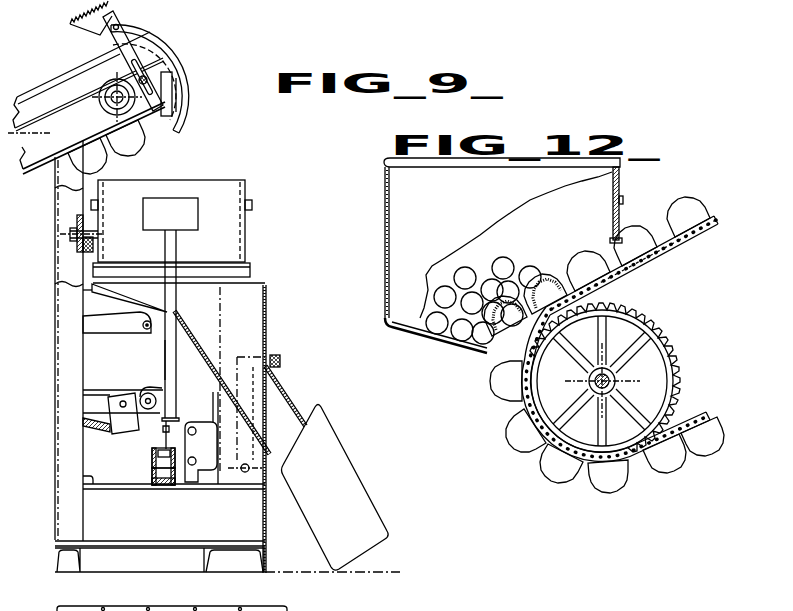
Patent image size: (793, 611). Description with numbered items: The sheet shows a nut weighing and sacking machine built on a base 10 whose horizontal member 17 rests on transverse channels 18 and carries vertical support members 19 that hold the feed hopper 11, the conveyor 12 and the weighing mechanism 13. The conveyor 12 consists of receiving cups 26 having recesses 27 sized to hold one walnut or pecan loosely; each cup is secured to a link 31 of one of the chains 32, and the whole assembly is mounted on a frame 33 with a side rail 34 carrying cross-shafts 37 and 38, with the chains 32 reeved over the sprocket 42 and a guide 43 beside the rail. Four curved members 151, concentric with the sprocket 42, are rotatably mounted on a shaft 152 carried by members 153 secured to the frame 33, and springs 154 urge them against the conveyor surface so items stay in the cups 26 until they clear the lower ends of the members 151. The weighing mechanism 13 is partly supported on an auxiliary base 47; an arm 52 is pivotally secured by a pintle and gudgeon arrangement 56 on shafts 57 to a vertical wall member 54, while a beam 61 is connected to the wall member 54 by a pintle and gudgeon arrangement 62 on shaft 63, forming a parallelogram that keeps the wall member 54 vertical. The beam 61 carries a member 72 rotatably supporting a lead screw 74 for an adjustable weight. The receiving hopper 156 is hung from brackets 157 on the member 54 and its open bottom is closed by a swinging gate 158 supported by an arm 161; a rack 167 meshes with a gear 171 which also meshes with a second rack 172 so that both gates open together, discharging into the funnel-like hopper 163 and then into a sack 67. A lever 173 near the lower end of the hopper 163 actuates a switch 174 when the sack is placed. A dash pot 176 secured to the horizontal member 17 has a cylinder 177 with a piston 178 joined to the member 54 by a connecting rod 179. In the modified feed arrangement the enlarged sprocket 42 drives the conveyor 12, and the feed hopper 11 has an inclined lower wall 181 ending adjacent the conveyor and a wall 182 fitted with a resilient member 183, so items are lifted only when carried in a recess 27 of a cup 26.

In FIG. 9, the base 10 is at (268, 560).
In FIG. 12, the feed hopper 11 is at (383, 238).
In FIG. 9, the conveyor 12 is at (70, 52).
In FIG. 12, the conveyor 12 is at (714, 422).
In FIG. 9, the weighing mechanism 13 is at (112, 359).
In FIG. 9, the horizontal member 17 is at (157, 542).
In FIG. 9, the transverse channels 18 is at (203, 561).
In FIG. 9, the vertical support members 19 is at (68, 410).
In FIG. 9, the receiving cups 26 is at (139, 146).
In FIG. 12, the receiving cups 26 is at (596, 259).
In FIG. 12, the recesses 27 is at (543, 277).
In FIG. 12, the links 31 is at (712, 222).
In FIG. 9, the chains 32 is at (30, 125).
In FIG. 12, the chains 32 is at (650, 258).
In FIG. 9, the frame 33 is at (37, 172).
In FIG. 9, the side rail 34 is at (46, 122).
In FIG. 12, the cross-shaft 37 is at (599, 391).
In FIG. 9, the cross-shaft 38 is at (124, 102).
In FIG. 9, the sprocket 42 is at (107, 100).
In FIG. 12, the sprocket 42 is at (660, 328).
In FIG. 9, the guide rail 43 is at (65, 70).
In FIG. 9, the auxiliary base 47 is at (83, 477).
In FIG. 9, the arm 52 is at (90, 328).
In FIG. 9, the vertical wall member 54 is at (165, 366).
In FIG. 9, the pintle and gudgeon arrangement 56 is at (152, 311).
In FIG. 9, the shafts 57 is at (143, 326).
In FIG. 9, the beam 61 is at (90, 395).
In FIG. 9, the pintle and gudgeon arrangement 62 is at (166, 384).
In FIG. 9, the shaft 63 is at (147, 393).
In FIG. 9, the receptacle 67 is at (333, 440).
In FIG. 9, the member 72 is at (116, 396).
In FIG. 9, the lead screw 74 is at (88, 430).
In FIG. 9, the curved members 151 is at (156, 40).
In FIG. 9, the shaft 152 is at (129, 17).
In FIG. 9, the members 153 is at (156, 60).
In FIG. 9, the springs 154 is at (86, 19).
In FIG. 9, the receiving hopper 156 is at (224, 186).
In FIG. 9, the brackets 157 is at (165, 352).
In FIG. 9, the swinging gate 158 is at (250, 270).
In FIG. 9, the arm 161 is at (99, 206).
In FIG. 9, the hopper 163 is at (267, 297).
In FIG. 9, the rack 167 is at (77, 248).
In FIG. 9, the gear 171 is at (90, 234).
In FIG. 9, the second rack 172 is at (77, 218).
In FIG. 9, the lever 173 is at (279, 357).
In FIG. 9, the switch 174 is at (203, 426).
In FIG. 9, the dash pot 176 is at (149, 484).
In FIG. 9, the cylinder 177 is at (152, 474).
In FIG. 9, the piston 178 is at (153, 457).
In FIG. 9, the connecting rod 179 is at (163, 438).
In FIG. 12, the lower wall 181 is at (440, 334).
In FIG. 12, the wall 182 is at (619, 188).
In FIG. 12, the resilient member 183 is at (621, 206).